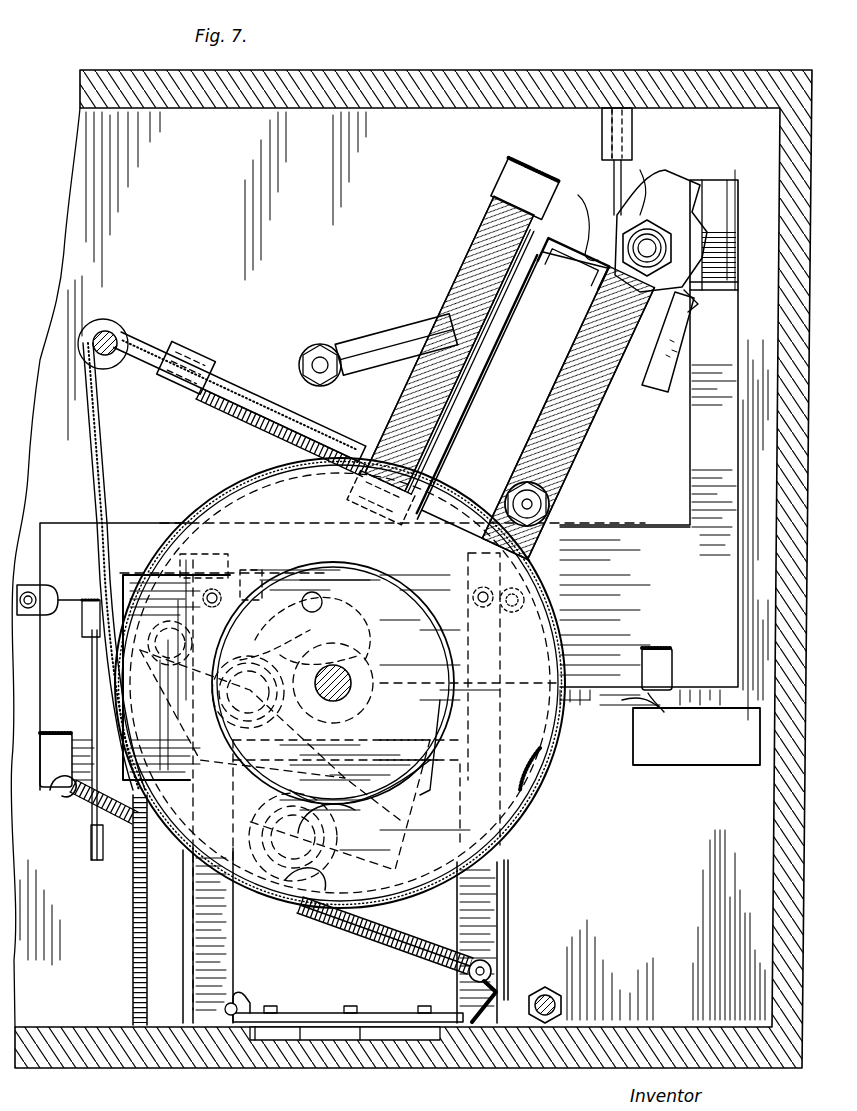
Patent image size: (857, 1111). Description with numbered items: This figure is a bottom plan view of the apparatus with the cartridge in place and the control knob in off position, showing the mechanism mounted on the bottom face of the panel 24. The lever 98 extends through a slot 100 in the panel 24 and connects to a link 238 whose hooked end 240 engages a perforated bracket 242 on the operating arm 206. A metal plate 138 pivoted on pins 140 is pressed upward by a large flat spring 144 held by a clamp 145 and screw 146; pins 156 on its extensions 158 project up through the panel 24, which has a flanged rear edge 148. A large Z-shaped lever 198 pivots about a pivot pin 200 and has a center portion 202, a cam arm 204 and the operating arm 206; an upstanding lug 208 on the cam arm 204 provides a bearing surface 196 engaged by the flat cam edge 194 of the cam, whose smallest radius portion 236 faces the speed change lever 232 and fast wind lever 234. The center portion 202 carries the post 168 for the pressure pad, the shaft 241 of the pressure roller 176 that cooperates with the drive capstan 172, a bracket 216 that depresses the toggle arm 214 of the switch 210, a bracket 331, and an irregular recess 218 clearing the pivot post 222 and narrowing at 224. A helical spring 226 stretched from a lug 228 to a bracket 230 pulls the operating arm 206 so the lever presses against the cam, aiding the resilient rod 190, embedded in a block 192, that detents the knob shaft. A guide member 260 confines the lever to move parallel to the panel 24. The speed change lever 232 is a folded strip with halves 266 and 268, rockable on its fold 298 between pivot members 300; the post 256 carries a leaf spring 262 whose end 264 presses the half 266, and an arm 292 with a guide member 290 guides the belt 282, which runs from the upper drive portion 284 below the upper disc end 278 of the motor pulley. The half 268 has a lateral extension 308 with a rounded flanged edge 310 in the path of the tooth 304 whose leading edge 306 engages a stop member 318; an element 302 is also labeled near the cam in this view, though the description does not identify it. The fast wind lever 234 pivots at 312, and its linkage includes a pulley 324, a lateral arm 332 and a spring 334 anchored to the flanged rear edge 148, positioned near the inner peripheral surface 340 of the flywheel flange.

The panel 24 is at (313, 188).
The lever 98 is at (90, 850).
The slot 100 is at (92, 834).
The metal plate 138 is at (216, 920).
The pins 140 is at (248, 1002).
The flat spring 144 is at (340, 965).
The clamp 145 is at (398, 1012).
The screw 146 is at (365, 1040).
The flanged rear edge 148 is at (225, 1040).
The pins 156 is at (198, 600).
The extensions 158 is at (200, 698).
The post 168 is at (470, 590).
The drive capstan 172 is at (351, 678).
The pressure roller 176 is at (262, 565).
The resilient rod 190 is at (628, 185).
The block 192 is at (592, 110).
The flat cam edge 194 is at (722, 236).
The bearing surface 196 is at (722, 278).
The Z-shaped lever 198 is at (634, 518).
The pivot pin 200 is at (570, 520).
The center portion 202 is at (640, 602).
The cam arm 204 is at (690, 434).
The operating arm 206 is at (78, 730).
The upstanding lug 208 is at (705, 195).
The switch 210 is at (700, 765).
The toggle arm 214 is at (630, 705).
The bracket 216 is at (665, 665).
The recess 218 is at (372, 656).
The pivot post 222 is at (212, 690).
The narrowed portion 224 is at (140, 530).
The helical spring 226 is at (408, 960).
The lug 228 is at (478, 1030).
The bracket 230 is at (52, 790).
The speed change lever 232 is at (492, 228).
The fast wind lever 234 is at (511, 443).
The smallest radius portion 236 is at (622, 246).
The link 238 is at (72, 740).
The hooked end 240 is at (60, 598).
The shaft 241 is at (311, 590).
The perforated bracket 242 is at (84, 625).
The post 256 is at (323, 358).
The guide member 260 is at (52, 560).
The leaf spring 262 is at (372, 345).
The end 264 is at (438, 332).
The elongate half 266 is at (480, 255).
The elongate half 268 is at (470, 387).
The upper disc end 278 is at (140, 340).
The belt 282 is at (299, 372).
The upper drive portion 284 is at (115, 338).
The guide member 290 is at (183, 388).
The arm 292 is at (298, 472).
The fold 298 is at (470, 345).
The pivot members 300 is at (535, 230).
The clip 302 is at (695, 300).
The tooth 304 is at (640, 190).
The leading edge 306 is at (612, 170).
The lateral extension 308 is at (568, 268).
The rounded flanged edge 310 is at (577, 214).
The pivot 312 is at (550, 495).
The stop member 318 is at (694, 342).
The pulley 324 is at (200, 721).
The bracket 331 is at (245, 565).
The lateral arm 332 is at (230, 760).
The spring 334 is at (128, 910).
The inner peripheral surface 340 is at (292, 882).